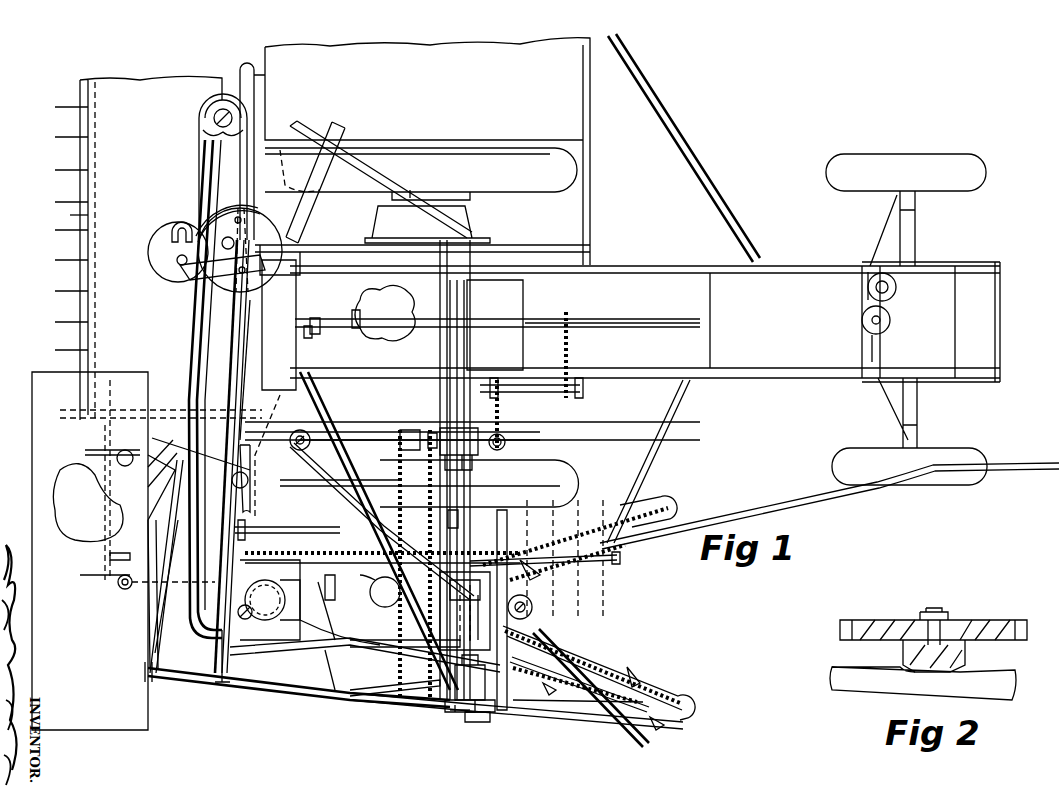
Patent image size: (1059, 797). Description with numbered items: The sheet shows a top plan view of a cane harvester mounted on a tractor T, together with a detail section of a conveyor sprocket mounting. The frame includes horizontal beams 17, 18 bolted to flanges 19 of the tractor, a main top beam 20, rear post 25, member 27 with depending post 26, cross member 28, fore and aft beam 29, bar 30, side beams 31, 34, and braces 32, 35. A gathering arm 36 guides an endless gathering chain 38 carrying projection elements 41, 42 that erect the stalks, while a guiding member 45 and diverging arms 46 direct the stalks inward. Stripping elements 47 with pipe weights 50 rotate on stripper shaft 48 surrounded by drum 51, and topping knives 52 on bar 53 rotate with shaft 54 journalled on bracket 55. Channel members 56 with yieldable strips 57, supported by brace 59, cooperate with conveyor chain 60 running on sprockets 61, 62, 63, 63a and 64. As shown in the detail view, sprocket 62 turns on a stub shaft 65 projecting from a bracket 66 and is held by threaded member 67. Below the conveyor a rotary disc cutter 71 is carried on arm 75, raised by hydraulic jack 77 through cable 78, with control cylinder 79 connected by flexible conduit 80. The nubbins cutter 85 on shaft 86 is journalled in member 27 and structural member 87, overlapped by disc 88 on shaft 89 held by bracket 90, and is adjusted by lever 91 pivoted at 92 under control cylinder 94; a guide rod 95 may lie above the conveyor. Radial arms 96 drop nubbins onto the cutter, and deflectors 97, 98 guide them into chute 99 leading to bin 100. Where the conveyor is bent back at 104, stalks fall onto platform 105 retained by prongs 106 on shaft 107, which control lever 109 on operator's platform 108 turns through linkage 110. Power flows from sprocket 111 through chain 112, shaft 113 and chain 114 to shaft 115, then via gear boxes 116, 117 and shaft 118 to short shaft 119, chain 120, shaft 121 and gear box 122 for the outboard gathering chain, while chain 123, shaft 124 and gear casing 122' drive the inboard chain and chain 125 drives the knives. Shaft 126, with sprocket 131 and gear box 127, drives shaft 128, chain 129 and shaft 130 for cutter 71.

In FIG. 1, the bin 100 is at (416, 101).
In FIG. 1, the tractor T is at (728, 302).
In FIG. 1, the guiding member 45 is at (780, 505).
In FIG. 1, the platform 105 is at (108, 186).
In FIG. 1, the prongs 106 is at (70, 237).
In FIG. 1, the shaft 107 is at (90, 219).
In FIG. 1, the operator's platform 108 is at (45, 560).
In FIG. 1, the sprocket 64 is at (210, 133).
In FIG. 1, the channel members 56 is at (189, 320).
In FIG. 1, the yieldable strip 57 is at (197, 340).
In FIG. 1, the lever 91 is at (228, 366).
In FIG. 1, the structural member 87 is at (243, 372).
In FIG. 1, the laterally extending member 27 is at (218, 656).
In FIG. 1, the side beam 34 is at (300, 696).
In FIG. 1, the brace 59 is at (328, 690).
In FIG. 1, the cross member 28 is at (355, 410).
In FIG. 1, the diagonal brace 35 is at (360, 490).
In FIG. 1, the horizontal beam 18 is at (340, 428).
In FIG. 1, the sprocket 63a is at (210, 440).
In FIG. 1, the linkage 110 is at (95, 450).
In FIG. 1, the control cylinder 94 is at (126, 462).
In FIG. 1, the nubbins cutter 85 is at (264, 222).
In FIG. 1, the shaft 86 is at (225, 240).
In FIG. 1, the disc 88 is at (158, 260).
In FIG. 1, the shaft 89 is at (178, 265).
In FIG. 1, the bracket 90 is at (190, 282).
In FIG. 1, the deflector 98 is at (208, 208).
In FIG. 1, the bent-back portion 104 is at (168, 226).
In FIG. 1, the chute 99 is at (312, 132).
In FIG. 1, the deflector 97 is at (298, 232).
In FIG. 1, the horizontal beam 17 is at (326, 262).
In FIG. 1, the radially extending arms 96 is at (296, 280).
In FIG. 1, the shaft 126 is at (312, 340).
In FIG. 1, the sprocket 131 is at (300, 330).
In FIG. 1, the gear box 127 is at (298, 340).
In FIG. 1, the main top beam 20 is at (466, 304).
In FIG. 1, the flanges 19 is at (485, 238).
In FIG. 1, the sprocket 111 is at (568, 330).
In FIG. 1, the chain 112 is at (575, 355).
In FIG. 1, the shaft 113 is at (540, 392).
In FIG. 1, the chain 114 is at (503, 410).
In FIG. 1, the shaft 115 is at (507, 440).
In FIG. 1, the gear box 116 is at (506, 448).
In FIG. 1, the shaft 118 is at (470, 490).
In FIG. 1, the bar 53 is at (510, 515).
In FIG. 1, the chain 123 is at (396, 480).
In FIG. 1, the chain 125 is at (418, 472).
In FIG. 1, the sprocket 63 is at (292, 452).
In FIG. 1, the pivot 92 is at (245, 490).
In FIG. 1, the supporting post 26 is at (250, 508).
In FIG. 1, the rear post 25 is at (250, 396).
In FIG. 1, the shaft 128 is at (252, 520).
In FIG. 1, the chain 129 is at (308, 548).
In FIG. 1, the fore and aft beam 29 is at (345, 545).
In FIG. 1, the bracket 55 is at (462, 530).
In FIG. 1, the bar 30 is at (278, 598).
In FIG. 1, the sprocket 62 is at (272, 634).
In FIG. 2, the sprocket 62 is at (868, 628).
In FIG. 1, the arm 75 is at (290, 610).
In FIG. 1, the hydraulic jack 77 is at (325, 580).
In FIG. 1, the cable 78 is at (318, 595).
In FIG. 1, the rotary disc cutter 71 is at (345, 625).
In FIG. 1, the shaft 130 is at (378, 580).
In FIG. 1, the shaft 124 is at (386, 592).
In FIG. 1, the gear casing 122' is at (441, 611).
In FIG. 1, the shaft 54 is at (415, 650).
In FIG. 1, the shaft 121 is at (410, 668).
In FIG. 1, the gear box 122 is at (446, 683).
In FIG. 1, the chain 120 is at (440, 704).
In FIG. 1, the short shaft 119 is at (450, 712).
In FIG. 1, the gear box 117 is at (468, 722).
In FIG. 1, the knives 52 is at (508, 705).
In FIG. 1, the side beam 31 is at (545, 724).
In FIG. 1, the diverging arms 46 is at (595, 708).
In FIG. 1, the gathering arm 36 is at (650, 680).
In FIG. 1, the gathering chain 38 is at (600, 650).
In FIG. 1, the projection element 41 is at (650, 650).
In FIG. 1, the projection element 42 is at (645, 665).
In FIG. 1, the guide rod 95 is at (628, 740).
In FIG. 1, the stripper shaft 48 is at (605, 565).
In FIG. 1, the stripping elements 47 is at (608, 600).
In FIG. 1, the weights 50 is at (580, 605).
In FIG. 1, the drum 51 is at (560, 590).
In FIG. 1, the sprocket 61 is at (535, 625).
In FIG. 1, the conveyor chain 60 is at (188, 540).
In FIG. 1, the control lever 109 is at (105, 563).
In FIG. 1, the control cylinder 79 is at (122, 588).
In FIG. 1, the flexible conduit 80 is at (172, 585).
In FIG. 1, the diagonal brace 32 is at (152, 622).
In FIG. 2, the stub shaft 65 is at (955, 635).
In FIG. 2, the threaded member 67 is at (915, 648).
In FIG. 2, the bracket 66 is at (895, 686).